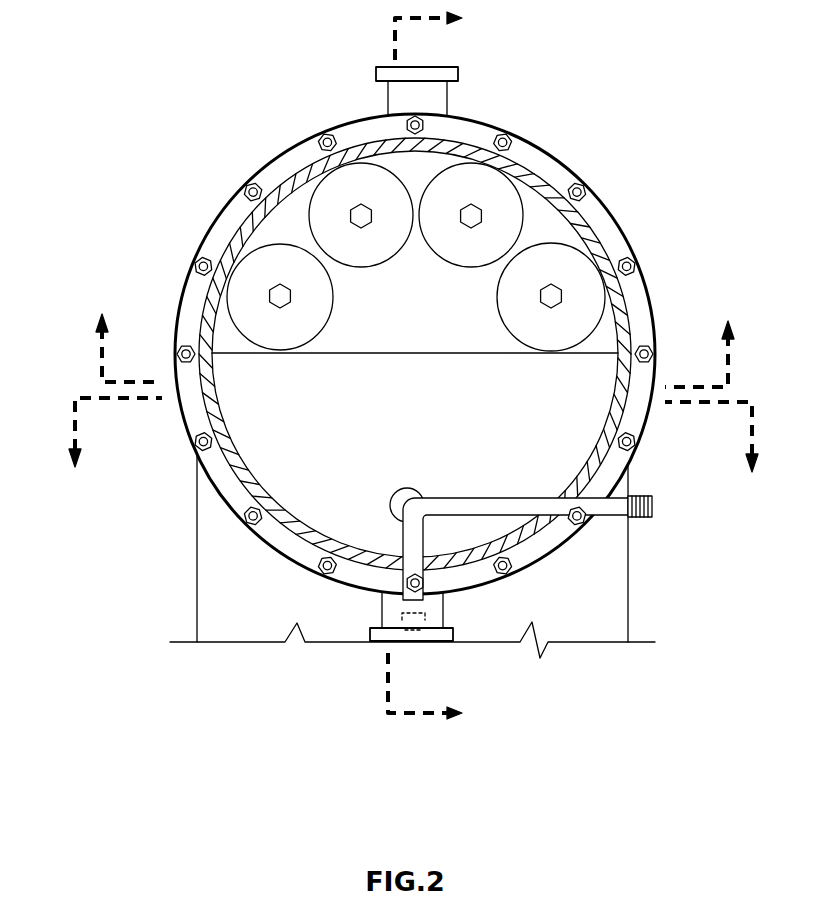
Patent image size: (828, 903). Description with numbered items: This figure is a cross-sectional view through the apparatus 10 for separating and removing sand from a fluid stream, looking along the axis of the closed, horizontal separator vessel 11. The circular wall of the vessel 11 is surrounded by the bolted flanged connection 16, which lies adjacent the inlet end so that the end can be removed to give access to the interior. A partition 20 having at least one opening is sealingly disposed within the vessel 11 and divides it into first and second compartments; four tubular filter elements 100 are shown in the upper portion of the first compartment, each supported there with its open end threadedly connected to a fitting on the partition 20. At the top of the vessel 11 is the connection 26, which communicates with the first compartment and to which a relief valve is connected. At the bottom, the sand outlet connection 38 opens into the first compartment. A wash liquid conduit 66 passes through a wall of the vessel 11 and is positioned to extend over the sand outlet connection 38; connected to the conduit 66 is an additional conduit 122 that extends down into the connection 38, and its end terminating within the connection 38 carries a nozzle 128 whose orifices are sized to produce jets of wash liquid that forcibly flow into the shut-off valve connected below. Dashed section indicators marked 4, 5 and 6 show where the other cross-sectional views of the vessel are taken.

The apparatus for separating and removing sand from a fluid stream 10 is at (424, 373).
The separator vessel 11 is at (530, 168).
The flanged connection 16 is at (255, 175).
The partition 20 is at (422, 424).
The connection 26 is at (448, 97).
The sand outlet connection 38 is at (444, 613).
The conduit 66 is at (650, 520).
The tubular filter elements 100 is at (378, 268).
The conduit 122 is at (400, 603).
The nozzle 128 is at (413, 637).
The section line 4 is at (438, 366).
The section line 5 is at (415, 334).
The section line 6 is at (414, 453).